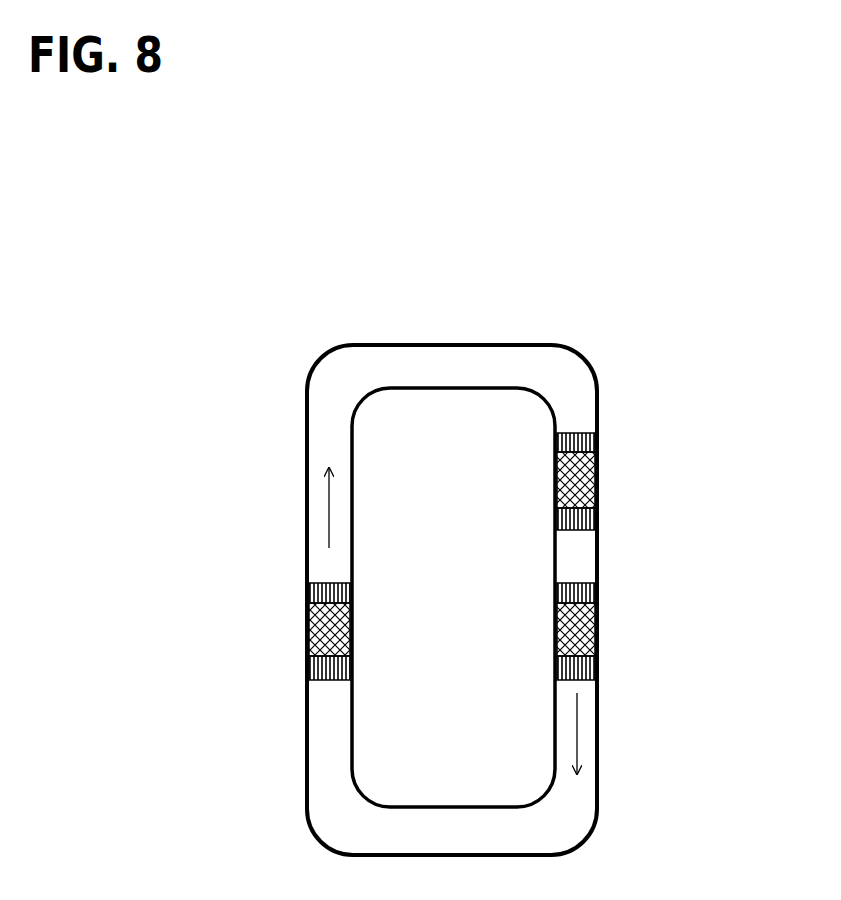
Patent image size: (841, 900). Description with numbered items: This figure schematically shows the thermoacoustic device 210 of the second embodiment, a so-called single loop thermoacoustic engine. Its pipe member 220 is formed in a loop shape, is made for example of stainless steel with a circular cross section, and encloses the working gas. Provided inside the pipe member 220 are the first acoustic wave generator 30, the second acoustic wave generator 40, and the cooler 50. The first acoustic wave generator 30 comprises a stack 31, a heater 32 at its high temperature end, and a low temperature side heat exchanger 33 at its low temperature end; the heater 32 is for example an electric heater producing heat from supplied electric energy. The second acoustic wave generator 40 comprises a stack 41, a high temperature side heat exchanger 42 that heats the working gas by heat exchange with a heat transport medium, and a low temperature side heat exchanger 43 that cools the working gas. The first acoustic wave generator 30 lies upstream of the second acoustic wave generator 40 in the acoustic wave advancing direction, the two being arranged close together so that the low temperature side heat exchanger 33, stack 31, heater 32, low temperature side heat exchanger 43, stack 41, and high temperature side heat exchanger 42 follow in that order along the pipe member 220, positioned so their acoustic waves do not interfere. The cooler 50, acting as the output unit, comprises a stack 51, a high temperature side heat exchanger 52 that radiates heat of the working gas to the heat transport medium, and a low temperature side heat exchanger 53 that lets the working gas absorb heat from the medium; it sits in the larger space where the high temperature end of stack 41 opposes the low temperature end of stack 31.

The thermoacoustic device 210 is at (630, 355).
The pipe member 220 is at (307, 444).
The first acoustic wave generator 30 is at (571, 484).
The stack 31 is at (598, 485).
The heater 32 is at (598, 519).
The low temperature side heat exchanger 33 is at (598, 441).
The second acoustic wave generator 40 is at (571, 634).
The stack 41 is at (598, 628).
The high temperature side heat exchanger 42 is at (598, 667).
The low temperature side heat exchanger 43 is at (598, 593).
The cooler 50 is at (340, 634).
The stack 51 is at (311, 632).
The high temperature side heat exchanger 52 is at (311, 667).
The low temperature side heat exchanger 53 is at (311, 592).